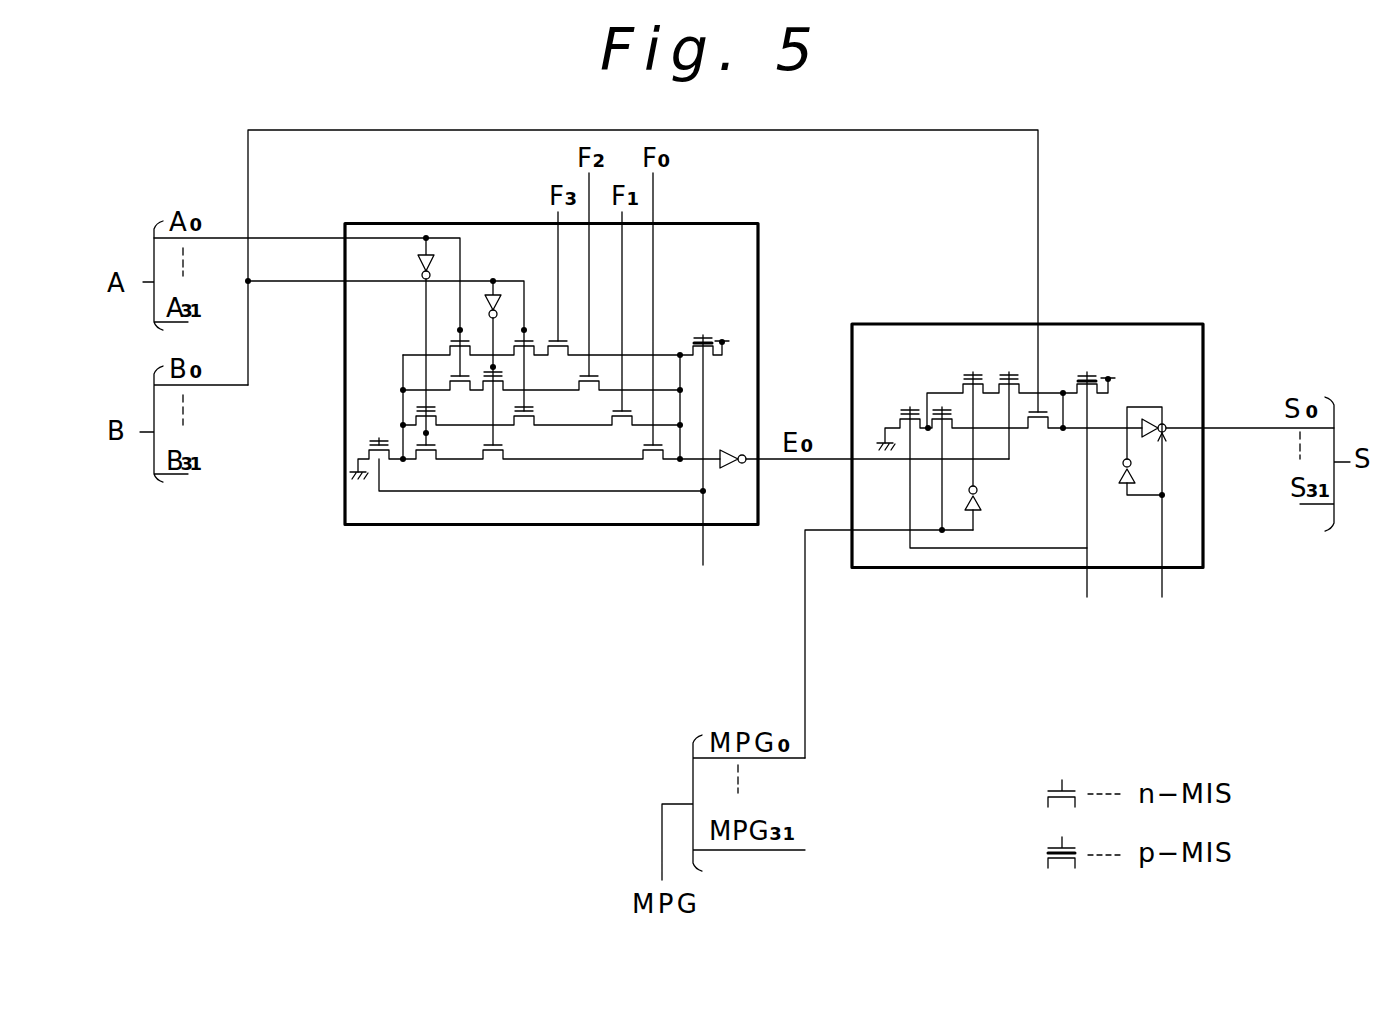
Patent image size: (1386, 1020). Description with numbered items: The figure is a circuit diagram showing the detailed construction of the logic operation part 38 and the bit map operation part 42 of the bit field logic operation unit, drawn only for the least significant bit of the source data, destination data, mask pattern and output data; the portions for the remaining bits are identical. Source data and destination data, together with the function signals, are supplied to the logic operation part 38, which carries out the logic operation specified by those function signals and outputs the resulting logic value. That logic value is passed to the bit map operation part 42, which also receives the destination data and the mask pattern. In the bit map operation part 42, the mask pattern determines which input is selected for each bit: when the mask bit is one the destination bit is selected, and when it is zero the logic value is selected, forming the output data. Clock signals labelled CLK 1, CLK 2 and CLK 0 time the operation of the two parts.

The logic operation part 38 is at (738, 223).
The bit map operation part 42 is at (1140, 324).
The clock signal CLK1 input line 1 is at (750, 583).
The clock signal CLK2 input line 2 is at (1103, 611).
The clock signal CLK0 input line 0 is at (1189, 572).